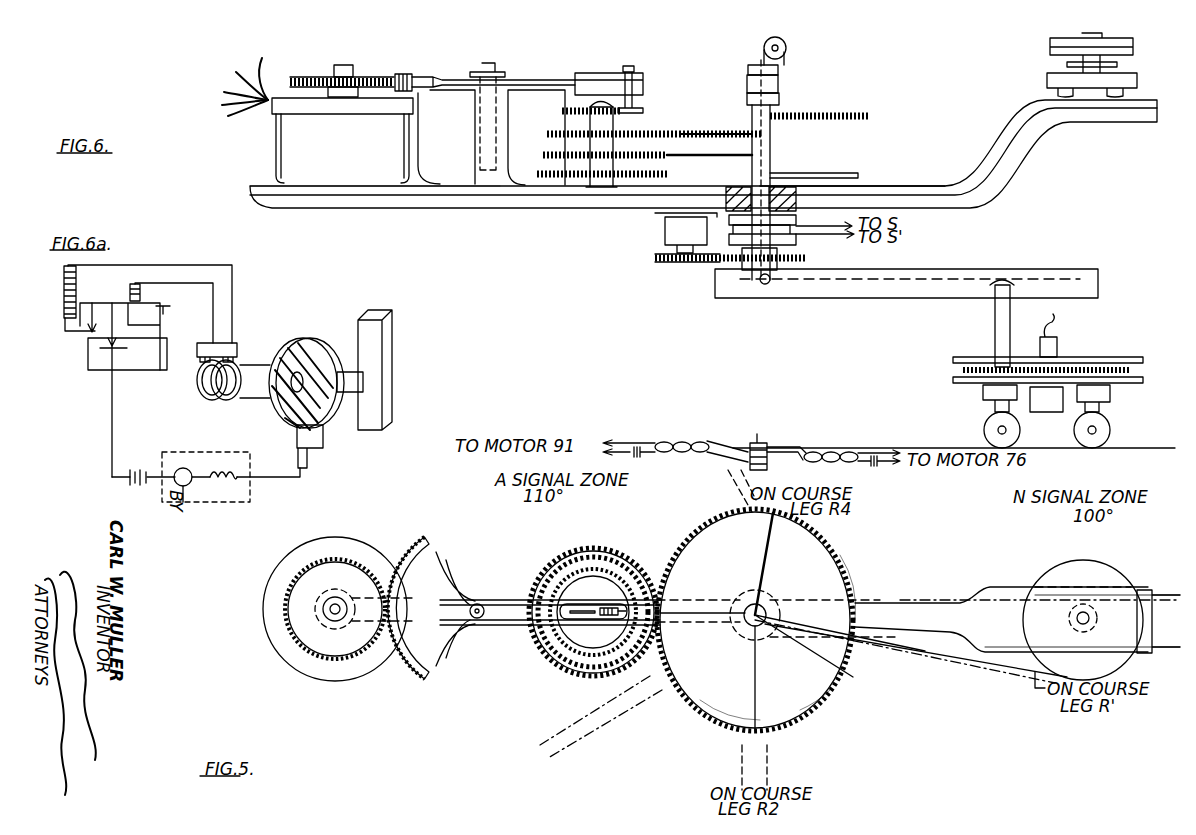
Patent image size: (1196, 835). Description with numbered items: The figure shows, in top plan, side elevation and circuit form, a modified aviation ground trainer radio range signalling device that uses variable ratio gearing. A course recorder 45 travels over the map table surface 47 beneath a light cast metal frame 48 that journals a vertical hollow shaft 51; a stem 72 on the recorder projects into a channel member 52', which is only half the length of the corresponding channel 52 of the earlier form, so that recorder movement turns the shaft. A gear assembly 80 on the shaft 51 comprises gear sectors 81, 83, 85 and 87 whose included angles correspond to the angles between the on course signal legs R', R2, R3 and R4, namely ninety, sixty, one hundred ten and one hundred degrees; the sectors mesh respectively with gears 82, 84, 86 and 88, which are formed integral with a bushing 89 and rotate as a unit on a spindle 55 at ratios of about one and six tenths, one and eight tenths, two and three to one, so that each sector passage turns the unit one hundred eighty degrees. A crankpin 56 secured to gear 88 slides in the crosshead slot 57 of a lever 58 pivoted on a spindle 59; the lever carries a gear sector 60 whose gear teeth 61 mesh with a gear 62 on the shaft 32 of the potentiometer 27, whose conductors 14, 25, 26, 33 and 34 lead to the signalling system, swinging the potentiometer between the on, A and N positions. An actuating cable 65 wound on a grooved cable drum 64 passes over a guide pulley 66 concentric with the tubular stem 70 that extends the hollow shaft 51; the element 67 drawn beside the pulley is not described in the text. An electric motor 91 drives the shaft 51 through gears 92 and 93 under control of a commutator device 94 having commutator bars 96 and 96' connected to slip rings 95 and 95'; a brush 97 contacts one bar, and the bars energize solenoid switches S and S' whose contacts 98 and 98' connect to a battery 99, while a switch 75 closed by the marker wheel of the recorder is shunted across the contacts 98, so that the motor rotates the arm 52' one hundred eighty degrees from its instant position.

In FIG. 6, the conductor 14 is at (240, 78).
In FIG. 6, the conductor 25 is at (235, 88).
In FIG. 6, the conductor 26 is at (269, 72).
In FIG. 6, the potentiometer 27 is at (268, 100).
In FIG. 5, the potentiometer 27 is at (282, 672).
In FIG. 6, the shaft 32 is at (343, 65).
In FIG. 6, the conductor 33 is at (235, 115).
In FIG. 6, the conductor 34 is at (234, 104).
In FIG. 6, the course recorder 45 is at (1143, 383).
In FIG. 6, the map table surface 47 is at (858, 447).
In FIG. 6, the frame 48 is at (276, 205).
In FIG. 5, the frame 48 is at (1000, 587).
In FIG. 6, the hollow shaft 51 is at (779, 100).
In FIG. 6A, the hollow shaft 51 is at (275, 380).
In FIG. 6, the channel member 52 is at (1046, 410).
In FIG. 6, the channel member 52' is at (906, 293).
In FIG. 6A, the channel member 52' is at (393, 370).
In FIG. 6, the spindle 55 is at (590, 97).
In FIG. 5, the spindle 55 is at (578, 622).
In FIG. 6, the crankpin 56 is at (625, 72).
In FIG. 5, the crankpin 56 is at (622, 622).
In FIG. 6, the crosshead slot 57 is at (598, 73).
In FIG. 5, the crosshead slot 57 is at (575, 604).
In FIG. 6, the lever 58 is at (428, 93).
In FIG. 5, the lever 58 is at (442, 625).
In FIG. 6, the spindle 59 is at (486, 63).
In FIG. 5, the spindle 59 is at (477, 604).
In FIG. 6, the gear sector 60 is at (430, 77).
In FIG. 5, the gear sector 60 is at (418, 556).
In FIG. 6, the gear teeth 61 is at (398, 74).
In FIG. 5, the gear teeth 61 is at (420, 545).
In FIG. 6, the gear 62 is at (298, 77).
In FIG. 5, the gear 62 is at (312, 572).
In FIG. 5, the cable drum 64 is at (1100, 568).
In FIG. 6, the actuating cable 65 is at (916, 45).
In FIG. 5, the actuating cable 65 is at (922, 650).
In FIG. 6, the guide pulley 66 is at (786, 50).
In FIG. 6, the bracket 67 is at (778, 68).
In FIG. 6, the tubular stem 70 is at (778, 85).
In FIG. 6, the stem 72 is at (1010, 312).
In FIG. 6, the switch 75 is at (758, 434).
In FIG. 6A, the switch 75 is at (125, 350).
In FIG. 6, the gear assembly 80 is at (775, 142).
In FIG. 6, the gear sector 81 is at (860, 175).
In FIG. 5, the gear sector 81 is at (838, 562).
In FIG. 6, the gear 82 is at (537, 174).
In FIG. 5, the gear 82 is at (620, 562).
In FIG. 6, the gear sector 83 is at (692, 158).
In FIG. 5, the gear sector 83 is at (708, 528).
In FIG. 6, the gear 84 is at (543, 155).
In FIG. 5, the gear 84 is at (593, 548).
In FIG. 6, the gear sector 85 is at (700, 133).
In FIG. 5, the gear sector 85 is at (695, 713).
In FIG. 6, the gear 86 is at (547, 134).
In FIG. 5, the gear 86 is at (562, 668).
In FIG. 6, the gear sector 87 is at (868, 114).
In FIG. 5, the gear sector 87 is at (828, 713).
In FIG. 6, the gear 88 is at (562, 112).
In FIG. 5, the gear 88 is at (552, 642).
In FIG. 6, the bushing 89 is at (613, 120).
In FIG. 6, the electric motor 91 is at (665, 230).
In FIG. 6A, the electric motor 91 is at (185, 502).
In FIG. 6, the gear 92 is at (660, 262).
In FIG. 6, the gear 93 is at (808, 258).
In FIG. 6, the commutator device 94 is at (797, 240).
In FIG. 6A, the commutator device 94 is at (312, 318).
In FIG. 6, the slip ring 95 is at (750, 239).
In FIG. 6A, the slip ring 95 is at (260, 402).
In FIG. 6, the slip ring 95' is at (753, 226).
In FIG. 6A, the slip ring 95' is at (219, 385).
In FIG. 6A, the commutator bar 96 is at (316, 371).
In FIG. 6A, the commutator bar 96' is at (302, 370).
In FIG. 6A, the brush 97 is at (323, 440).
In FIG. 6A, the switch contacts 98 is at (112, 318).
In FIG. 6A, the switch contacts 98' is at (178, 314).
In FIG. 6A, the battery 99 is at (132, 488).
In FIG. 6A, the solenoid switch S is at (79, 292).
In FIG. 6A, the solenoid switch S' is at (147, 292).
In FIG. 5, the on course signal leg R' is at (967, 626).
In FIG. 5, the on course signal leg R2 is at (770, 757).
In FIG. 5, the on course signal leg R3 is at (541, 720).
In FIG. 5, the on course signal leg R4 is at (718, 484).